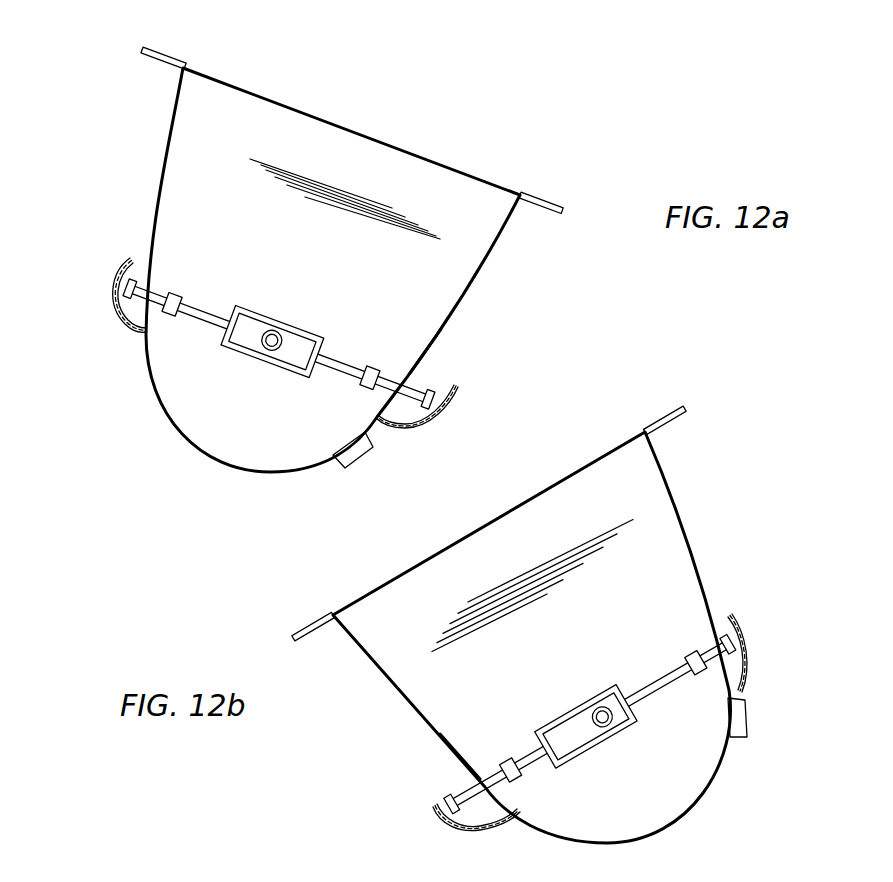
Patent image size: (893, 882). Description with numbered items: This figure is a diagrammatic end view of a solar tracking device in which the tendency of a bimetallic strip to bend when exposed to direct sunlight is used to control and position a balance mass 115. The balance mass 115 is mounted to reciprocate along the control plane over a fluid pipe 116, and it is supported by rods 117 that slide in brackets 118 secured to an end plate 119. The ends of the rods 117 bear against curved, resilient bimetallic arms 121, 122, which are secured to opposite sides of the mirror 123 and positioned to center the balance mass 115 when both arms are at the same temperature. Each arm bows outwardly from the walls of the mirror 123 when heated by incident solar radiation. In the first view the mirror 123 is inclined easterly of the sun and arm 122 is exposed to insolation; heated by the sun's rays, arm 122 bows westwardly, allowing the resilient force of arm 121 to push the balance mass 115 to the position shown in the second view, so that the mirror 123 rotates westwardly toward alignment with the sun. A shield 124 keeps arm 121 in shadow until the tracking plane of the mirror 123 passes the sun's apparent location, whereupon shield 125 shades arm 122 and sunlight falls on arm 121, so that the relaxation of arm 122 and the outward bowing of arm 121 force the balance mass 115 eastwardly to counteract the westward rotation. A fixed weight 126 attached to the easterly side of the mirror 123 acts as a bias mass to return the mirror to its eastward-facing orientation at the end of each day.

In FIG. 12a, the balance mass 115 is at (300, 338).
In FIG. 12b, the balance mass 115 is at (608, 690).
In FIG. 12a, the fluid pipe 116 is at (270, 330).
In FIG. 12b, the fluid pipe 116 is at (586, 706).
In FIG. 12a, the rods 117 is at (343, 365).
In FIG. 12b, the rods 117 is at (654, 690).
In FIG. 12a, the brackets 118 is at (174, 318).
In FIG. 12b, the brackets 118 is at (690, 658).
In FIG. 12a, the end plate 119 is at (458, 297).
In FIG. 12b, the end plate 119 is at (681, 527).
In FIG. 12a, the bimetallic arm 121 is at (458, 390).
In FIG. 12b, the bimetallic arm 121 is at (733, 626).
In FIG. 12a, the bimetallic arm 122 is at (116, 310).
In FIG. 12b, the bimetallic arm 122 is at (440, 813).
In FIG. 12a, the mirror 123 is at (424, 360).
In FIG. 12b, the mirror 123 is at (465, 768).
In FIG. 12a, the shield 124 is at (548, 203).
In FIG. 12b, the shield 124 is at (660, 423).
In FIG. 12a, the shield 125 is at (155, 49).
In FIG. 12b, the shield 125 is at (295, 632).
In FIG. 12a, the fixed weight 126 is at (366, 446).
In FIG. 12b, the fixed weight 126 is at (748, 716).